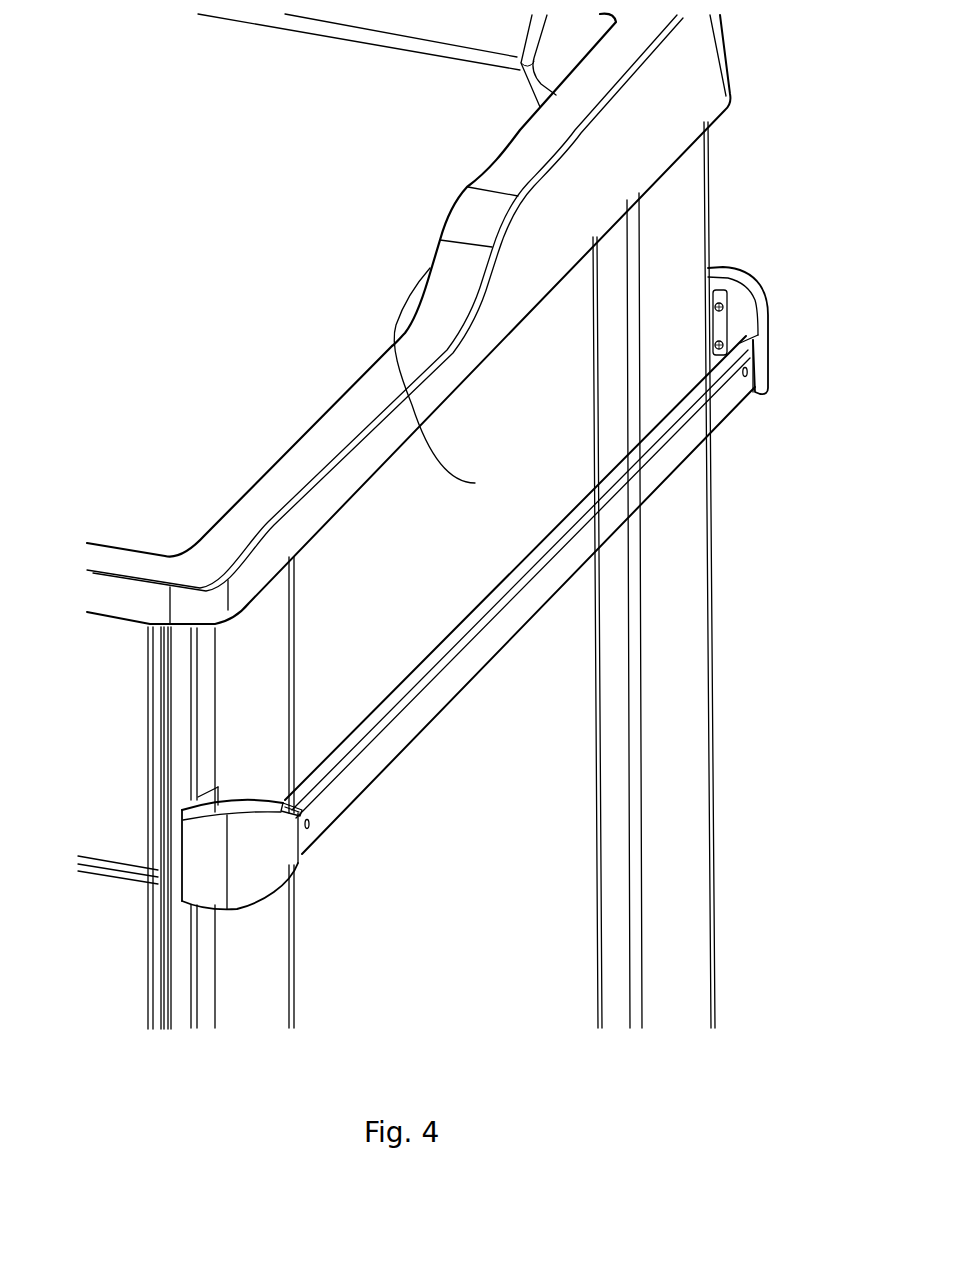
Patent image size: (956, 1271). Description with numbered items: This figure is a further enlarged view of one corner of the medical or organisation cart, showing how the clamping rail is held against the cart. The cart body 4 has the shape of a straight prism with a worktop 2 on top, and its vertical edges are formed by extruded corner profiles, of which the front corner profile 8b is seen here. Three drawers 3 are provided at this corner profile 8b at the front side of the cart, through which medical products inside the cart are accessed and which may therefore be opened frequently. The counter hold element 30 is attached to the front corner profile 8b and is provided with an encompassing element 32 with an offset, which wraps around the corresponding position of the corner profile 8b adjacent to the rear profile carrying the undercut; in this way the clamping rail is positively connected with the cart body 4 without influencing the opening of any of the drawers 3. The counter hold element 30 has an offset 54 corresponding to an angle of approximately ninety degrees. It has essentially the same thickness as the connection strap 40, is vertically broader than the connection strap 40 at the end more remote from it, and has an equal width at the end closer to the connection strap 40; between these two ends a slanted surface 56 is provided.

The worktop 2 is at (212, 267).
The cart body 4 is at (447, 350).
The drawers 3 is at (117, 742).
The corner profile 8b is at (252, 988).
The connection strap 40 is at (497, 600).
The counter hold element 30 is at (307, 795).
The offset 54 is at (223, 803).
The slanted surface 56 is at (305, 815).
The encompassing element 32 is at (220, 807).